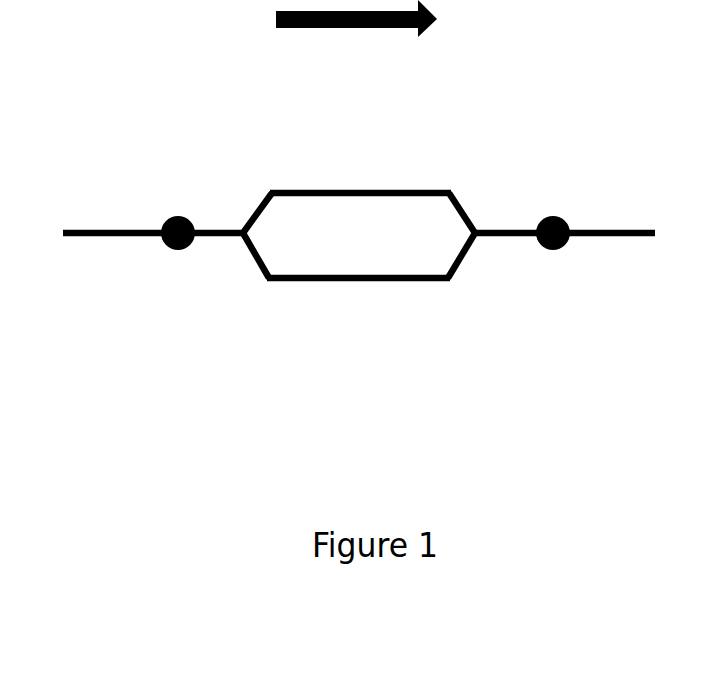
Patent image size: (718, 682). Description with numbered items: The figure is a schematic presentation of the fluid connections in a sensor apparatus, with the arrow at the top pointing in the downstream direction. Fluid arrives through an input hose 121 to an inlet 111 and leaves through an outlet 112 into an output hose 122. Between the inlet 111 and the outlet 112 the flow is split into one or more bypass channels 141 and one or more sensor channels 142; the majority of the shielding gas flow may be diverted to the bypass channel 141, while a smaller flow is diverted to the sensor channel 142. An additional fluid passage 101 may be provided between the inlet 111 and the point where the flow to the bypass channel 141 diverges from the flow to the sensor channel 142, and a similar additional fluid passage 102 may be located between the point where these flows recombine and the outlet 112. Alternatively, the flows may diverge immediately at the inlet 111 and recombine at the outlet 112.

The additional fluid passage 101 is at (212, 226).
The additional fluid passage 102 is at (491, 226).
The inlet 111 is at (180, 215).
The outlet 112 is at (553, 215).
The input hose 121 is at (115, 236).
The output hose 122 is at (613, 236).
The bypass channel 141 is at (348, 188).
The sensor channel 142 is at (350, 283).